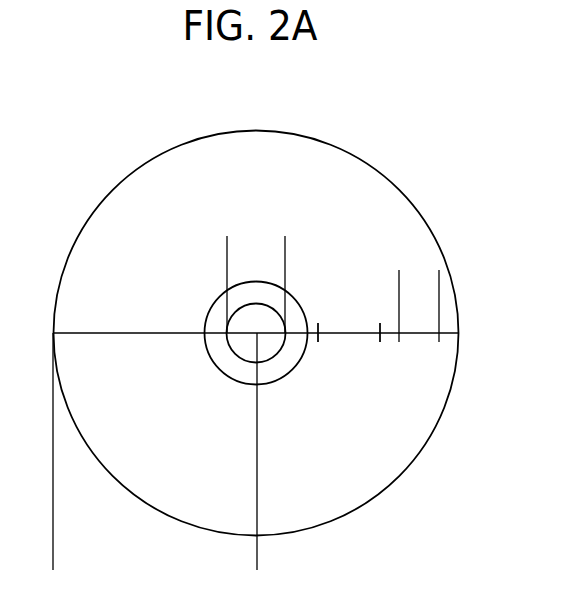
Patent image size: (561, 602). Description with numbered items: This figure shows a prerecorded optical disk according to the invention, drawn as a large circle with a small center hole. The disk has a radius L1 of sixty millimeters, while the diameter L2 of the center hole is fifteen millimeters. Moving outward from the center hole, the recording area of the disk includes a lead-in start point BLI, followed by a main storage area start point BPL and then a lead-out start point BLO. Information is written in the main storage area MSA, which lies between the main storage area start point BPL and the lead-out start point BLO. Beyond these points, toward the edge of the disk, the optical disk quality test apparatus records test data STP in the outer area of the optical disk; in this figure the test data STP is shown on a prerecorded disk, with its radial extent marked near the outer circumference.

The radius L1 is at (257, 560).
The diameter of the center hole L2 is at (182, 245).
The lead-in start point BLI is at (293, 306).
The lead-out start point BLO is at (380, 357).
The main storage area start point BPL is at (318, 357).
The main storage area MSA is at (318, 327).
The test data STP is at (480, 275).